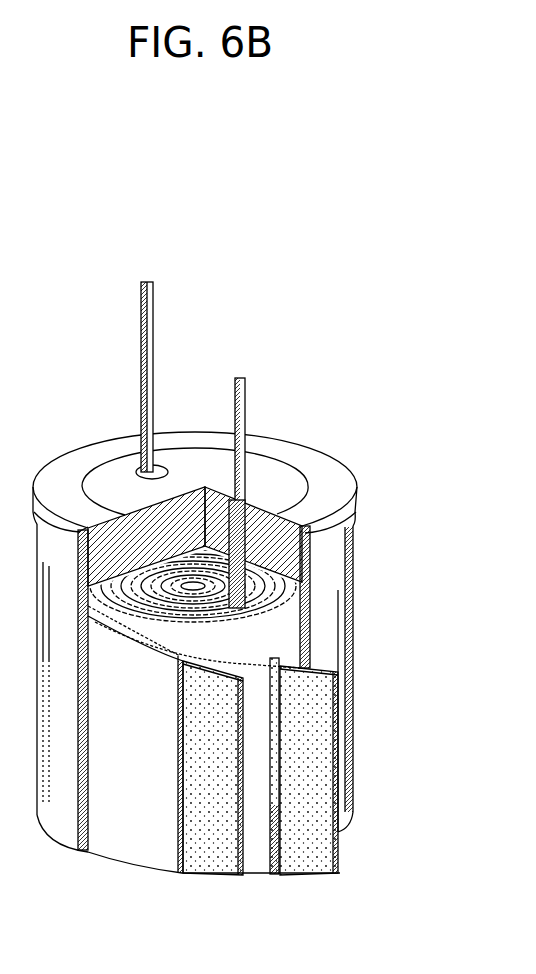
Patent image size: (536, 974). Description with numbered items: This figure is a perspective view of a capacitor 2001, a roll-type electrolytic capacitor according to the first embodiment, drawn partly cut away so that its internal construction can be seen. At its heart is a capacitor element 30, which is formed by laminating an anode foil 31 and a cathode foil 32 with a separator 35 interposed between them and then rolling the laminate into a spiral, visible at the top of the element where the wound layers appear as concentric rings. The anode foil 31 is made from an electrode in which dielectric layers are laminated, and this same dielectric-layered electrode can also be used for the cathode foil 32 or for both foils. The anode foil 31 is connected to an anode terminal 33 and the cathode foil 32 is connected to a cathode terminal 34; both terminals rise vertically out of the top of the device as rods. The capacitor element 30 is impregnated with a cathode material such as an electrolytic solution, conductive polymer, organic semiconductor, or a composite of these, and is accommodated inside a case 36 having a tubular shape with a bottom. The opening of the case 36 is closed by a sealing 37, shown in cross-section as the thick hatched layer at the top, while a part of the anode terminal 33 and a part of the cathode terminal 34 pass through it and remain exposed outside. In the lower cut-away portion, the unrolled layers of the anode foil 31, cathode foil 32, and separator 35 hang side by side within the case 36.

The capacitor 2001 is at (432, 348).
The capacitor element 30 is at (292, 634).
The anode foil 31 is at (218, 862).
The cathode foil 32 is at (305, 870).
The anode terminal 33 is at (143, 347).
The cathode terminal 34 is at (247, 402).
The separator 35 is at (130, 855).
The case 36 is at (352, 593).
The sealing 37 is at (353, 472).